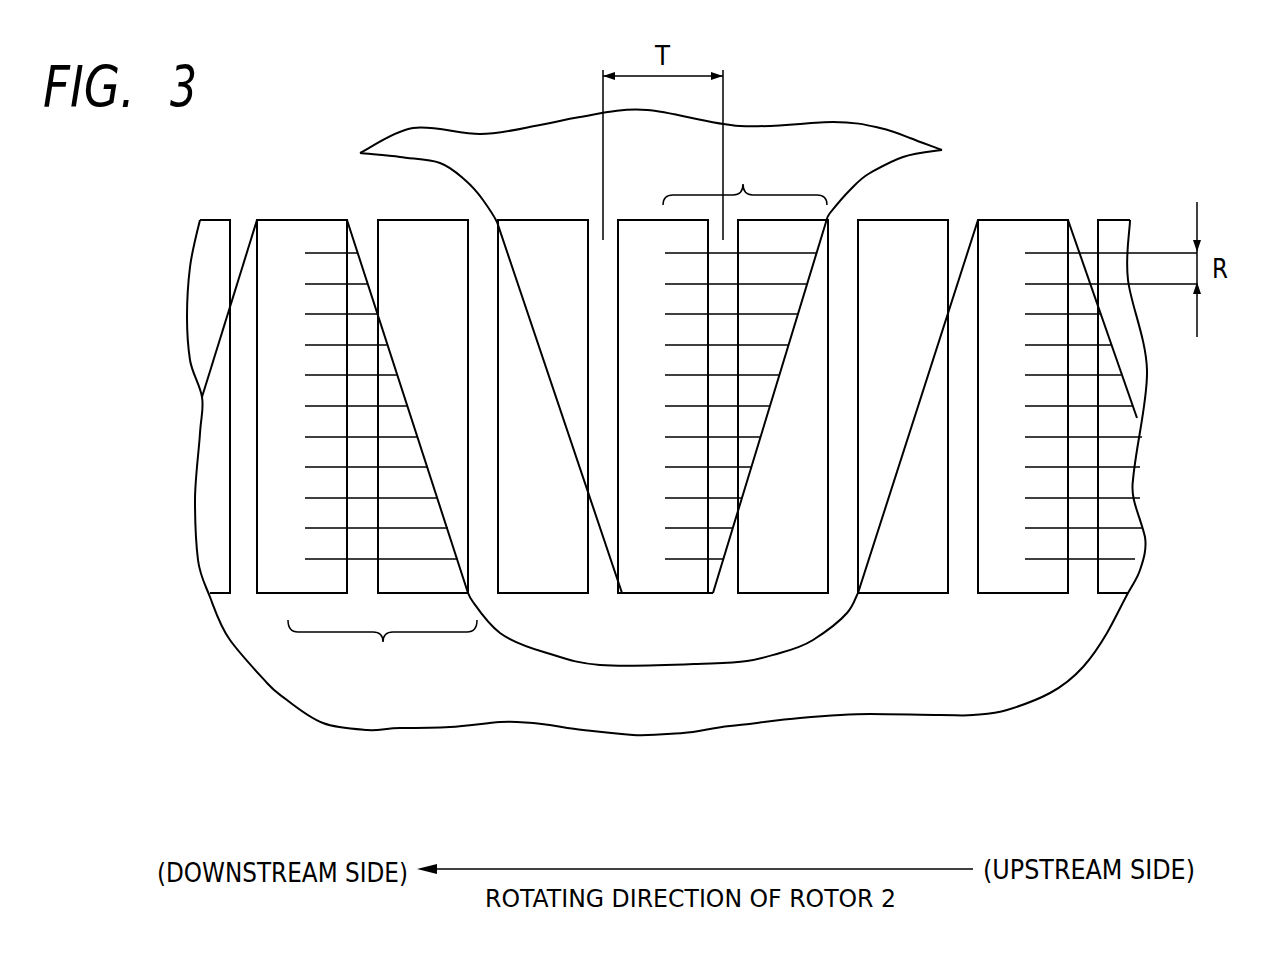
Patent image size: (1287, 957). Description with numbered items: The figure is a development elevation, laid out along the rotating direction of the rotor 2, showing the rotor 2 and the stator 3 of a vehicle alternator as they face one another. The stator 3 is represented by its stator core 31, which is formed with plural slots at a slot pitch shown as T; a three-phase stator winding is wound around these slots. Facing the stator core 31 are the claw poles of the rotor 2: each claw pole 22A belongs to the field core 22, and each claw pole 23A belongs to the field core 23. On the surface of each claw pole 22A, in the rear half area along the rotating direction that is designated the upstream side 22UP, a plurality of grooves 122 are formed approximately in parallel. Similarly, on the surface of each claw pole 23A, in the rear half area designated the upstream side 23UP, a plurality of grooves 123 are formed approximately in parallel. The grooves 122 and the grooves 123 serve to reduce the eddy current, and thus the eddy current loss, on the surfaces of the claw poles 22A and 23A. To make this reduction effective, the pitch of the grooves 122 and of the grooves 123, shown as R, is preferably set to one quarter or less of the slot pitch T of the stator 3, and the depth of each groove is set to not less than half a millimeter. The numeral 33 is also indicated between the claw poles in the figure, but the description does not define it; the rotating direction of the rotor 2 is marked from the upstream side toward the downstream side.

The rotor 2 is at (651, 403).
The stator 3 is at (1022, 600).
The field core 22 is at (497, 160).
The upstream side 22UP is at (745, 408).
The claw pole 22A is at (638, 575).
The field core 23 is at (729, 462).
The claw pole 23A is at (1002, 252).
The upstream side 23UP is at (383, 643).
The stator core 31 is at (925, 568).
The gap between fins 33 is at (962, 230).
The grooves 122 is at (752, 368).
The grooves 123 is at (1120, 560).